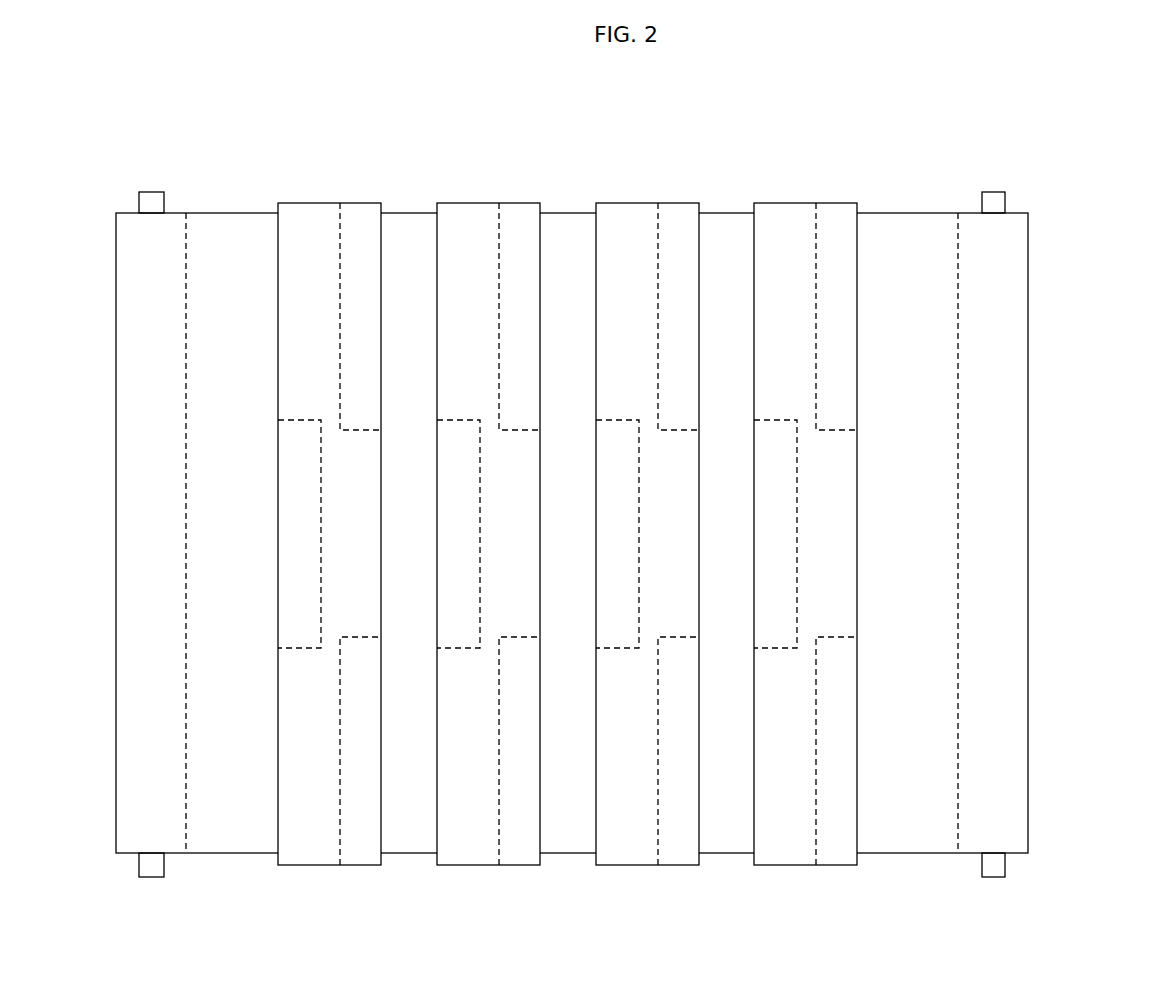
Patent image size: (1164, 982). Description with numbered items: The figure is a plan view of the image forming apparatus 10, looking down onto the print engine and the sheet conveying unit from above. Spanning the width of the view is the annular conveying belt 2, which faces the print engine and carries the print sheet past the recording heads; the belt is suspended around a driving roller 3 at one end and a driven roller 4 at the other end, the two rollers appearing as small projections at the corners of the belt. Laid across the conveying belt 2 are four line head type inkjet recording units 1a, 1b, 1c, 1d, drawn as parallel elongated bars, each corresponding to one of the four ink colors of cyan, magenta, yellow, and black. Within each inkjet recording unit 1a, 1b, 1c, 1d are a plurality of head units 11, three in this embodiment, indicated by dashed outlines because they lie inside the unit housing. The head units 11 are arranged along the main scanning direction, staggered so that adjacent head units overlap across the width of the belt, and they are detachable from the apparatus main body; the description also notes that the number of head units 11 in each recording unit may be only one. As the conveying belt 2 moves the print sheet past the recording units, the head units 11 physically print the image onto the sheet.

The image forming apparatus 10 is at (1115, 140).
The conveying belt 2 is at (917, 225).
The driving roller 3 is at (138, 201).
The driven roller 4 is at (1006, 201).
The inkjet recording unit 1a is at (768, 203).
The inkjet recording unit 1b is at (610, 203).
The inkjet recording unit 1c is at (451, 203).
The inkjet recording unit 1d is at (292, 203).
The head unit 11 is at (370, 240).